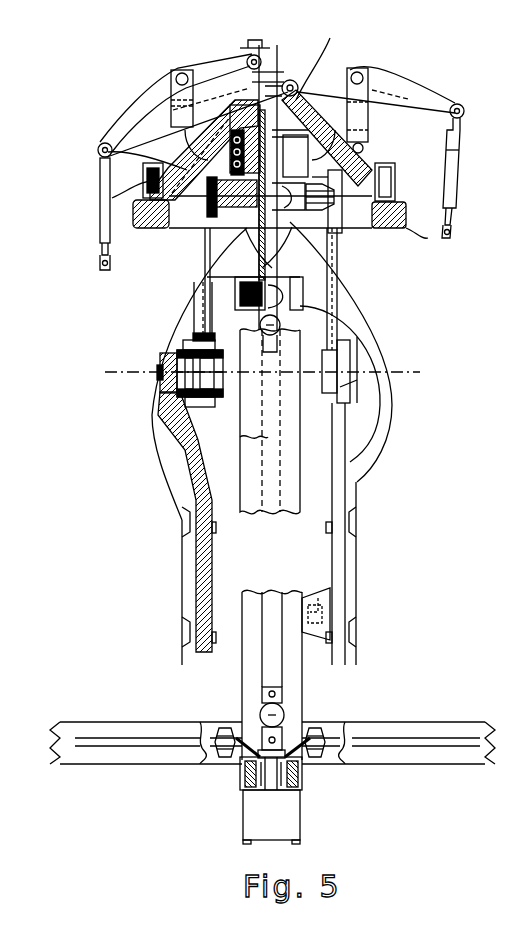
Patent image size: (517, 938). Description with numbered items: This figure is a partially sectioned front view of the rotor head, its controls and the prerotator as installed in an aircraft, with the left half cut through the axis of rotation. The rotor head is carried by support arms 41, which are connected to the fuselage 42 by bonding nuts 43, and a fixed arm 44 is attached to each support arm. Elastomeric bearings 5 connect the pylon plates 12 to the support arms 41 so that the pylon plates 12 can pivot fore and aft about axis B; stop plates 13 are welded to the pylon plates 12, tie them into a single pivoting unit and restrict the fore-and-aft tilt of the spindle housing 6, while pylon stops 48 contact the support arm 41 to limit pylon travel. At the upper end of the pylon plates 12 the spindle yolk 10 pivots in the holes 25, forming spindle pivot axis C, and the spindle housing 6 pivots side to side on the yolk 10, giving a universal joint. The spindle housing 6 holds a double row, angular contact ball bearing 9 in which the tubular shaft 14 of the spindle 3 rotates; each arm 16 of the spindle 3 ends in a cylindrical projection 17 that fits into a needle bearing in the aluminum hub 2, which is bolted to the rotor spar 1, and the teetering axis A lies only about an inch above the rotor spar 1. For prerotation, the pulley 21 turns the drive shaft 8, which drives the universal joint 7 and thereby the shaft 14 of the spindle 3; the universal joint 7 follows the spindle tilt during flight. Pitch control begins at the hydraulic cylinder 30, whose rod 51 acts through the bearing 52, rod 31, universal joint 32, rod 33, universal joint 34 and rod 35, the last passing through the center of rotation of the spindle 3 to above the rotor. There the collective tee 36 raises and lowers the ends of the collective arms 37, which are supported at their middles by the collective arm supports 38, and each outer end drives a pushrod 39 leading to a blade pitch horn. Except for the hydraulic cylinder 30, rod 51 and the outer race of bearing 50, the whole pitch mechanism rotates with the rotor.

The rotor spar 1 is at (398, 230).
The aluminum hub 2 is at (418, 205).
The spindle 3 is at (300, 84).
The elastomeric bearings 5 is at (165, 420).
The spindle housing 6 is at (112, 162).
The universal joint 7 is at (372, 340).
The drive shaft 8 is at (240, 665).
The double row, angular contact ball bearing 9 is at (160, 120).
The spindle yolk 10 is at (205, 232).
The pylon plates 12 is at (340, 260).
The stop plates 13 is at (353, 308).
The tubular shaft 14 is at (233, 218).
The arm 16 is at (335, 35).
The cylindrical projection 17 is at (100, 200).
The pulley 21 is at (475, 722).
The holes 25 is at (98, 228).
The hydraulic cylinder 30 is at (300, 832).
The rod 31 is at (290, 723).
The universal joint 32 is at (285, 712).
The rod 33 is at (242, 680).
The universal joint 34 is at (188, 325).
The rod 35 is at (240, 62).
The collective tee 36 is at (252, 52).
The collective arms 37 is at (405, 80).
The collective arm supports 38 is at (372, 118).
The pushrod 39 is at (455, 186).
The support arms 41 is at (390, 428).
The fuselage 42 is at (366, 477).
The bonding nuts 43 is at (350, 534).
The arm 44 is at (302, 605).
The pylon stops 48 is at (372, 478).
The bearing 50 is at (302, 773).
The rod 51 is at (266, 784).
The bearing 52 is at (250, 748).
The teetering axis A is at (378, 190).
The axis B is at (120, 372).
The spindle pivot axis C is at (333, 238).